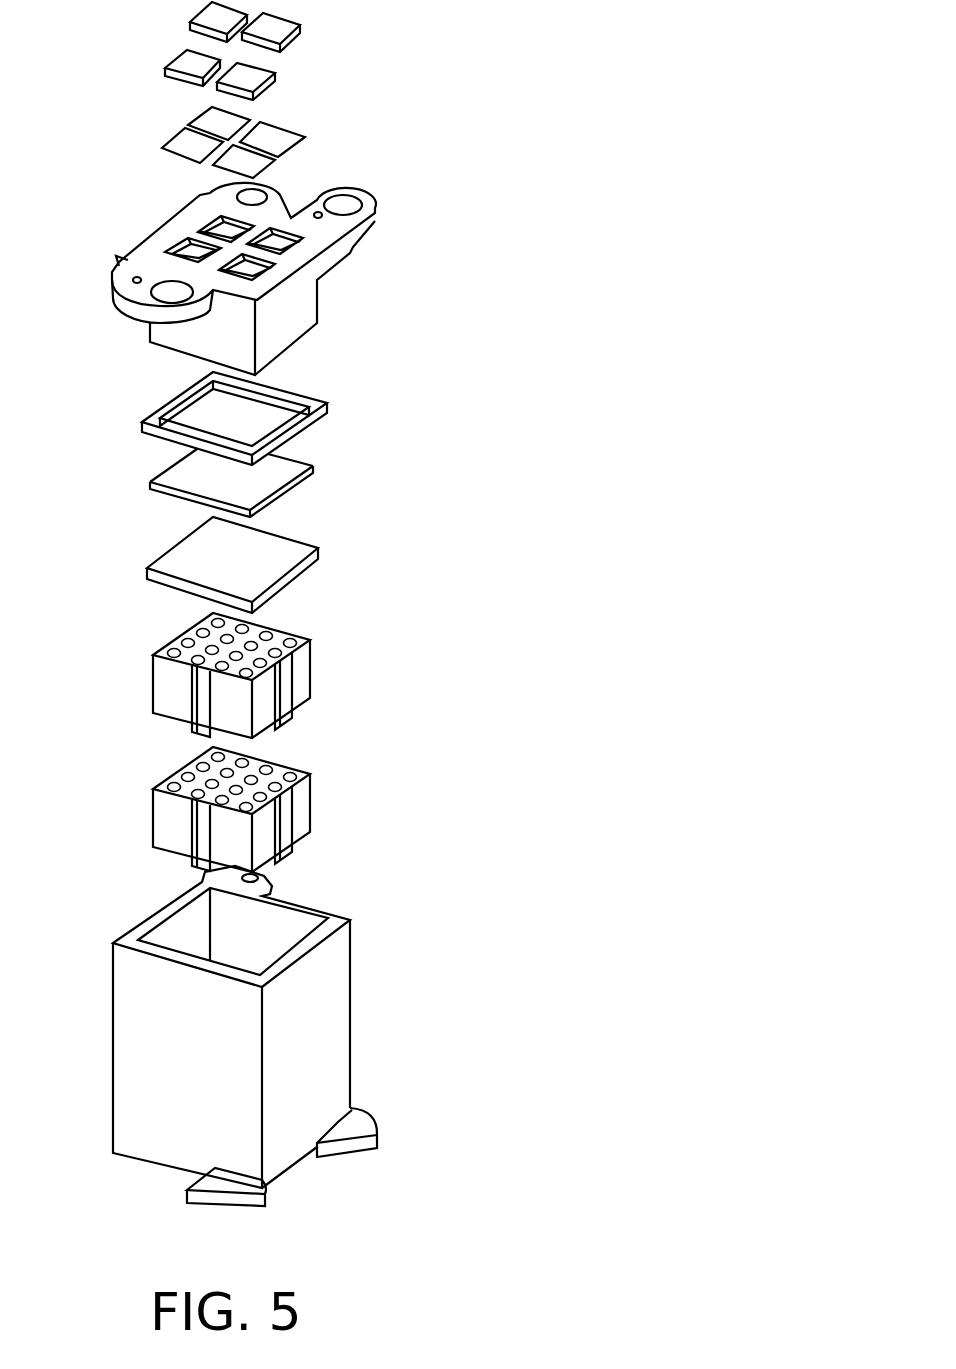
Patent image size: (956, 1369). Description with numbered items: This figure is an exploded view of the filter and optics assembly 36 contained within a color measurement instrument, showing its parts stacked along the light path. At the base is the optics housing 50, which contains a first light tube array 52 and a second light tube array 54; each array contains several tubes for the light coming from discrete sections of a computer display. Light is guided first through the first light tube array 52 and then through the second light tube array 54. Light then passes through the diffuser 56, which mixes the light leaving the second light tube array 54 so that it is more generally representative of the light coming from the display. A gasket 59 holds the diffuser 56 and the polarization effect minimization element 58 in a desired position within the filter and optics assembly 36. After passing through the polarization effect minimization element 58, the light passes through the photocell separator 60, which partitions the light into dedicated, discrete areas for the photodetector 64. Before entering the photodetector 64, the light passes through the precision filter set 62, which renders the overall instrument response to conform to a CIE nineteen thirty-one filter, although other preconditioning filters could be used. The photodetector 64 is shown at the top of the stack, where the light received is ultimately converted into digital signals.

The filter and optics assembly 36 is at (647, 908).
The optics housing 50 is at (351, 1015).
The first light tube array 52 is at (153, 810).
The second light tube array 54 is at (311, 672).
The diffuser 56 is at (146, 571).
The polarization effect minimization element 58 is at (310, 468).
The gasket 59 is at (141, 423).
The photocell separator 60 is at (318, 309).
The precision filter set 62 is at (161, 147).
The photodetector 64 is at (301, 29).